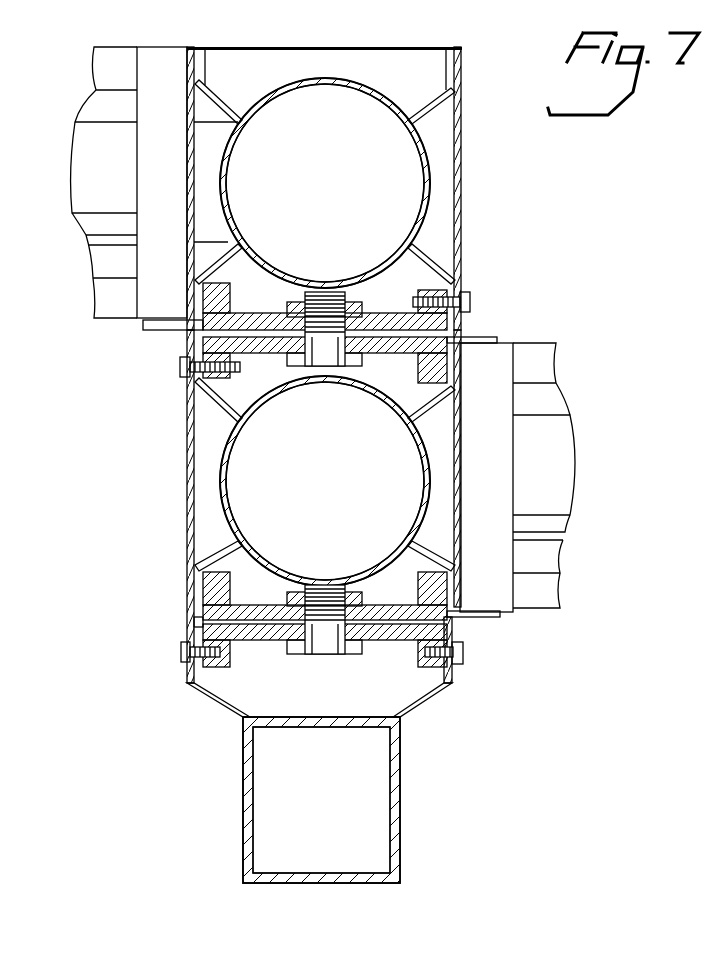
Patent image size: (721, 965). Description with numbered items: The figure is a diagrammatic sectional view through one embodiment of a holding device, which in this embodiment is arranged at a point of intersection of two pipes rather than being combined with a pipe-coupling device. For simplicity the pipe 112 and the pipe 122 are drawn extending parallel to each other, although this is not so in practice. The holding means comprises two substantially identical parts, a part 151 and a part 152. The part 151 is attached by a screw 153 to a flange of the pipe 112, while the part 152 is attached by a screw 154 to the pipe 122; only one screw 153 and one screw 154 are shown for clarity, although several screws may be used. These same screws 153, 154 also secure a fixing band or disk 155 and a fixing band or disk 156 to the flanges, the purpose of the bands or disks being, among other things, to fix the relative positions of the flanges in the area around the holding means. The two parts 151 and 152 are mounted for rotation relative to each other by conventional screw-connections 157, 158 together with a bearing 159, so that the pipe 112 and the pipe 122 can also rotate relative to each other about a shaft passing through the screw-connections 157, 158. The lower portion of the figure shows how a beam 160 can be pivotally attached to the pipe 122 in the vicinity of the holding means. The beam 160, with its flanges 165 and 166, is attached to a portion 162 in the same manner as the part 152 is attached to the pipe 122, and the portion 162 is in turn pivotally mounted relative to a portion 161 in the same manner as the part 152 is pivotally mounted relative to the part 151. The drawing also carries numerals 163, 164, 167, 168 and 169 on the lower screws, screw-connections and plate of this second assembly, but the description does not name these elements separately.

The pipe 112 is at (430, 188).
The pipe 122 is at (218, 462).
The part of the holding means 151 is at (200, 325).
The part of the holding means 152 is at (203, 380).
The screw 153 is at (470, 305).
The screw 154 is at (180, 367).
The fixing band or disk 155 is at (187, 190).
The fixing band or disk 156 is at (187, 437).
The screw-connection 157 is at (355, 358).
The screw-connection 158 is at (292, 335).
The bearing 159 is at (445, 333).
The beam 160 is at (243, 774).
The portion 161 is at (210, 593).
The portion 162 is at (200, 624).
The clamping screw 163 is at (464, 655).
The clamping screw 164 is at (181, 652).
The flange of the beam 165 is at (222, 703).
The flange of the beam 166 is at (425, 703).
The nut 167 is at (345, 646).
The connecting bolt 168 is at (285, 607).
The mounting plate 169 is at (450, 617).